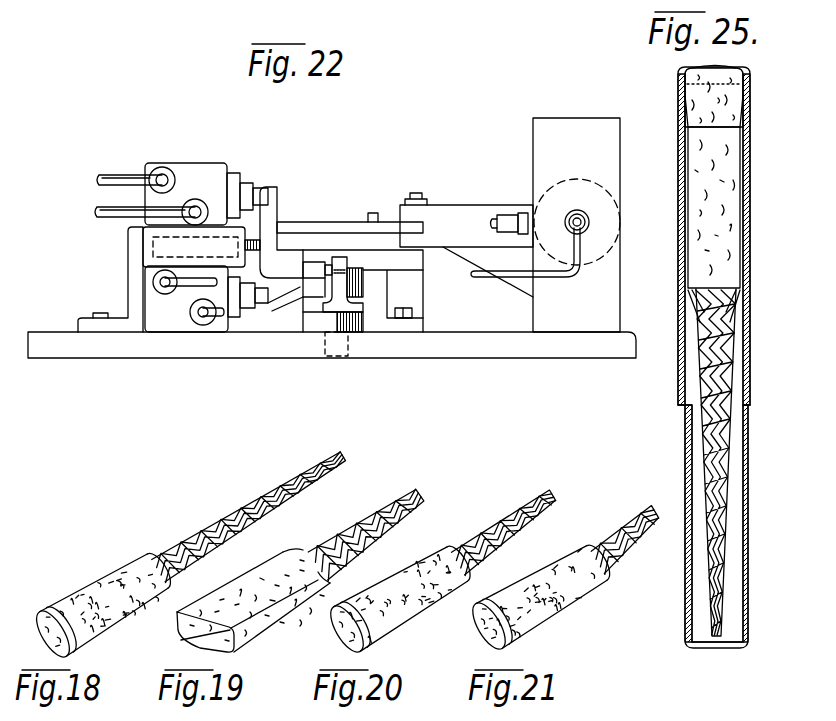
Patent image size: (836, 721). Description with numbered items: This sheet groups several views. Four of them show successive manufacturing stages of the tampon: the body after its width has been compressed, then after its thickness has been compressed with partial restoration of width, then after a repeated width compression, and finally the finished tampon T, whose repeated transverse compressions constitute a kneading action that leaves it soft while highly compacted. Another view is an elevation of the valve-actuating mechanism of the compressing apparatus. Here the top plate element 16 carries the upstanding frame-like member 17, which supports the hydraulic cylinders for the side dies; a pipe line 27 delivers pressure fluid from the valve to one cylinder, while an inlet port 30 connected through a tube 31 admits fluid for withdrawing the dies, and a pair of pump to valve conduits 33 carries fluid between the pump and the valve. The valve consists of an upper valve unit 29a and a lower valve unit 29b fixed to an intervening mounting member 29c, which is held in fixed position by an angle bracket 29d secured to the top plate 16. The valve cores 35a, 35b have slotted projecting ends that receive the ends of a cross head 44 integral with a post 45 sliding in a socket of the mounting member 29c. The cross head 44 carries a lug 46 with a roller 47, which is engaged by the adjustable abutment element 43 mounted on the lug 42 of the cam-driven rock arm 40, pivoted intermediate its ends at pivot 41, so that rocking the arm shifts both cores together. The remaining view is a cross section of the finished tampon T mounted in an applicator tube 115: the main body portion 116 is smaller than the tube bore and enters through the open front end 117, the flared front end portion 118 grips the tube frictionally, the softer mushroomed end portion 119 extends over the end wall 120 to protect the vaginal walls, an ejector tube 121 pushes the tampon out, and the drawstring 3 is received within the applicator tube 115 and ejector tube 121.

In FIG. 22, the top plate element 16 is at (47, 332).
In FIG. 22, the upstanding rectangular frame-like member 17 is at (543, 148).
In FIG. 22, the pipe line 27 is at (181, 289).
In FIG. 22, the upper valve unit 29a is at (160, 165).
In FIG. 22, the lower valve unit 29b is at (177, 330).
In FIG. 22, the mounting member 29c is at (143, 250).
In FIG. 22, the angle bracket 29d is at (130, 295).
In FIG. 22, the inlet port 30 is at (526, 213).
In FIG. 22, the tube 31 is at (215, 320).
In FIG. 22, the pump to valve conduits 33 is at (102, 209).
In FIG. 22, the valve core 35a is at (262, 188).
In FIG. 22, the valve core 35b is at (260, 308).
In FIG. 22, the rock arm 40 is at (362, 304).
In FIG. 22, the pivot 41 is at (348, 356).
In FIG. 22, the lug 42 is at (348, 262).
In FIG. 22, the adjustable abutment element 43 is at (340, 258).
In FIG. 22, the cross head 44 is at (274, 216).
In FIG. 22, the post 45 is at (238, 247).
In FIG. 22, the lug 46 is at (292, 300).
In FIG. 22, the roller 47 is at (312, 262).
In FIG. 25, the drawstring 3 is at (728, 419).
In FIG. 25, the applicator tube 115 is at (678, 271).
In FIG. 25, the main body portion 116 is at (697, 208).
In FIG. 25, the open front end 117 is at (683, 101).
In FIG. 25, the front end portion 118 is at (698, 108).
In FIG. 21, the front end portion 118 is at (520, 629).
In FIG. 25, the mushroomed end portion 119 is at (722, 68).
In FIG. 21, the mushroomed end portion 119 is at (505, 641).
In FIG. 25, the end wall 120 is at (681, 90).
In FIG. 25, the ejector tube 121 is at (748, 546).
In FIG. 25, the finished tampon T is at (705, 163).
In FIG. 21, the finished tampon T is at (586, 586).